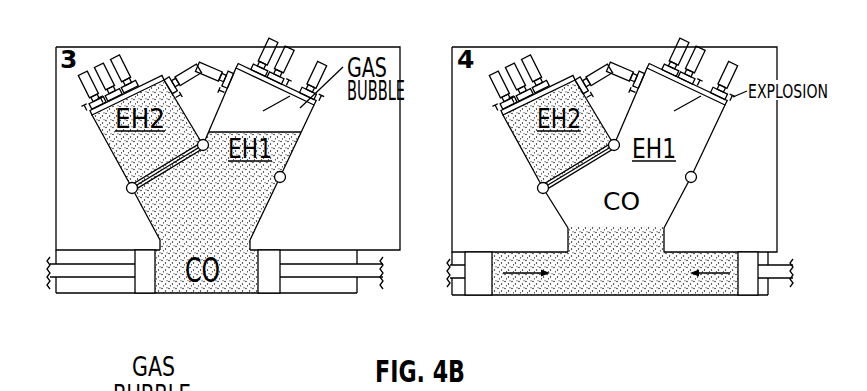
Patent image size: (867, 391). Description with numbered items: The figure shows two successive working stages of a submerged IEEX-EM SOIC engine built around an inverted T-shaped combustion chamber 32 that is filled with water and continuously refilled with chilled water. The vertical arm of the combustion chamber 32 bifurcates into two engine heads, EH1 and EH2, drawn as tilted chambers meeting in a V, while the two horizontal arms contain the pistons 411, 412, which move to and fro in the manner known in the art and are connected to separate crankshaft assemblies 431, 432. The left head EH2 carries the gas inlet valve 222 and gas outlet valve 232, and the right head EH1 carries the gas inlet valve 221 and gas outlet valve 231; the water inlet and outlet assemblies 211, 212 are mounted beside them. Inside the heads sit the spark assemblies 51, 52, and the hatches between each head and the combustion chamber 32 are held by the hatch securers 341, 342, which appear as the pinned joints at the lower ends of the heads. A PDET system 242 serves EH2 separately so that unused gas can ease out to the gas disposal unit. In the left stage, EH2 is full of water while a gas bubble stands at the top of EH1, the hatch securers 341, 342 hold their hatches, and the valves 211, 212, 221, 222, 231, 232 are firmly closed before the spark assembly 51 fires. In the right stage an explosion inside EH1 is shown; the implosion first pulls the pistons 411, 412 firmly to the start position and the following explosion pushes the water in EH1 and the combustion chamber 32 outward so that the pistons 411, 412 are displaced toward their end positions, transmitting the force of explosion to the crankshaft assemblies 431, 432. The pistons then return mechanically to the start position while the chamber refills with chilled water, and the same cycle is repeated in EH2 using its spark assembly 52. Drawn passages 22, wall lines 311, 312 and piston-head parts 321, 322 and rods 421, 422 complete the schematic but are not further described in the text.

The water inlet and outlet assembly 212 is at (85, 72).
The gas inlet valve 222 is at (130, 48).
The gas outlet valve 232 is at (186, 62).
The gas outlet valve 231 is at (220, 57).
The gas inlet valve 221 is at (277, 53).
The water inlet and outlet assembly 211 is at (321, 70).
The spark assembly 52 is at (92, 117).
The spark assembly 51 is at (306, 125).
The side wall of second explosion chamber 312 is at (97, 130).
The side wall of first explosion chamber 311 is at (293, 150).
The piston head of second explosion chamber 322 is at (170, 153).
The piston of second explosion chamber 321 is at (173, 158).
The hatch securer 342 is at (127, 181).
The hatch securer 341 is at (285, 180).
The PDET system 242 is at (697, 170).
The combustion chamber 32 is at (250, 237).
The connecting passage 22 is at (664, 243).
The crankshaft assembly 431 is at (372, 262).
The crankshaft assembly 432 is at (53, 280).
The left piston rod 422 is at (92, 273).
The right piston rod 421 is at (317, 279).
The piston 412 is at (142, 288).
The piston 411 is at (265, 286).